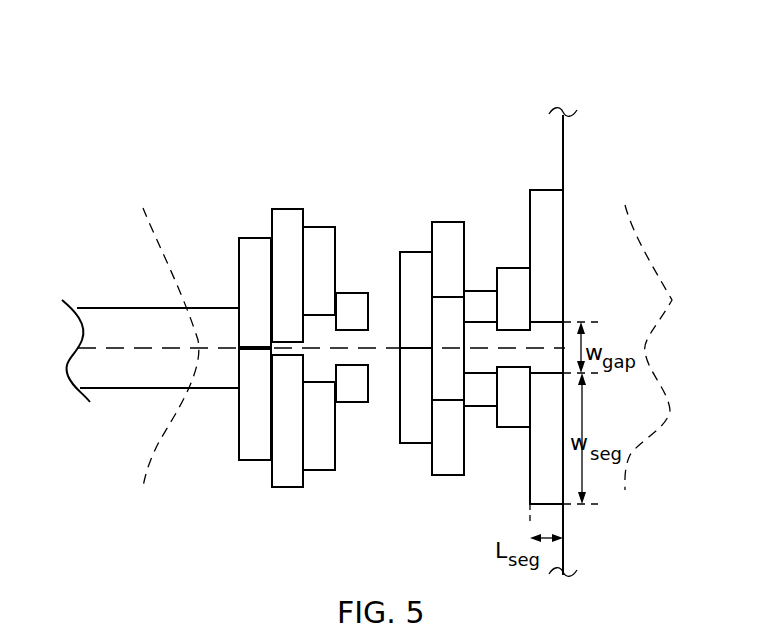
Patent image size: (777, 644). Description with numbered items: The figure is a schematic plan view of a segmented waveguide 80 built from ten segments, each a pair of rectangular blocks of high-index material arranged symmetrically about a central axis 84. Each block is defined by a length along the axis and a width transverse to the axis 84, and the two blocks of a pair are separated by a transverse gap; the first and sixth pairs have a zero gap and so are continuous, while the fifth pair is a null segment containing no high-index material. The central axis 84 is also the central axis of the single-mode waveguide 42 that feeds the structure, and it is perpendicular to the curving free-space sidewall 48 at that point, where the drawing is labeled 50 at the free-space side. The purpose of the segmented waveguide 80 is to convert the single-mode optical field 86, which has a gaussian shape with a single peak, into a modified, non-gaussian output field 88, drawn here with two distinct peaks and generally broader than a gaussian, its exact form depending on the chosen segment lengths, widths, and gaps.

The single-mode waveguide 42 is at (107, 378).
The curving free-space sidewall 48 is at (563, 235).
The electric machine 50 is at (687, 488).
The segmented waveguide 80 is at (562, 102).
The central axis 84 is at (160, 349).
The single-mode optical field 86 is at (150, 240).
The output field 88 is at (648, 262).